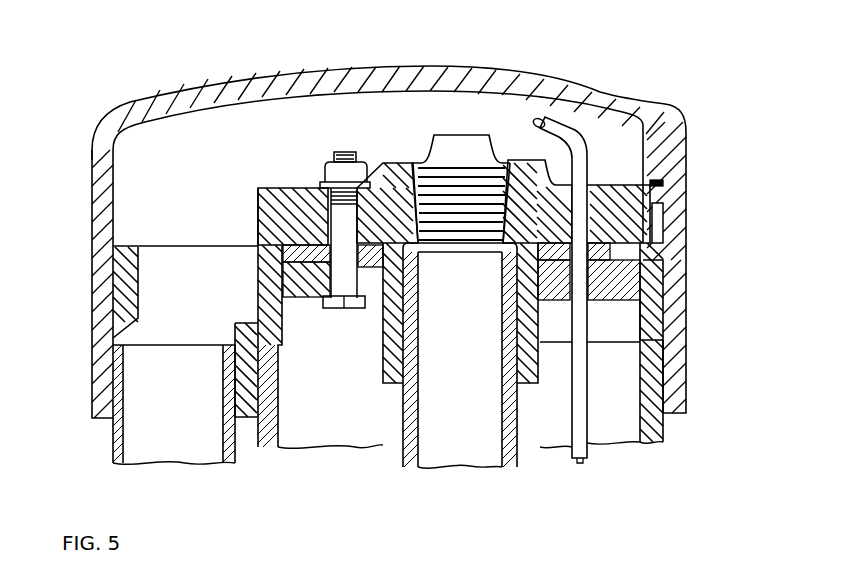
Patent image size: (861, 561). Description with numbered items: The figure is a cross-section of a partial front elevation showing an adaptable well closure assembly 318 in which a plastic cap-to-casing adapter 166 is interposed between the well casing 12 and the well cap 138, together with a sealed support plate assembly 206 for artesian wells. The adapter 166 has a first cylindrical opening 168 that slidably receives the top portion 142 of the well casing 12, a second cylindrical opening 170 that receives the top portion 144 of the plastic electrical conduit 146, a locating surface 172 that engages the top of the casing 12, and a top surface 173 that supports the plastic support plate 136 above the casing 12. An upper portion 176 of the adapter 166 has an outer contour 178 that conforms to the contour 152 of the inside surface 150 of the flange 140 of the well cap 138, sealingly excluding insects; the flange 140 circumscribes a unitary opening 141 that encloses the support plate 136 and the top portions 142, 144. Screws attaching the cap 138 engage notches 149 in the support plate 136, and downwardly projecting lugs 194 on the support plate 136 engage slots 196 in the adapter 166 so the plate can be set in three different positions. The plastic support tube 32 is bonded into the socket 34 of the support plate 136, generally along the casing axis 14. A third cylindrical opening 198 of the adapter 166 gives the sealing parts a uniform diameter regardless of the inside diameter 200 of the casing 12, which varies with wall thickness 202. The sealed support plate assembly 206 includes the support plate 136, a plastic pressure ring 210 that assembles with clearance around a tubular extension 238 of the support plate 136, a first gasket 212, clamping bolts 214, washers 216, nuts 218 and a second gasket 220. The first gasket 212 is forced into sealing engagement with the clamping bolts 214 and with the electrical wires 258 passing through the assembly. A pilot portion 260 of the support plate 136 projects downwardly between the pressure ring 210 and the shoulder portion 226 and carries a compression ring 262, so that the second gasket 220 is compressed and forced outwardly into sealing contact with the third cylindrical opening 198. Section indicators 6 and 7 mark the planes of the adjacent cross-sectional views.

The section line 6- 6 is at (100, 27).
The section line 7- 7 is at (70, 518).
The well casing 12 is at (303, 454).
The casing axis 14 is at (460, 145).
The support tube 32 is at (483, 478).
The socket 34 is at (495, 392).
The support plate 136 is at (256, 163).
The well cap 138 is at (269, 73).
The flange 140 is at (92, 206).
The unitary opening 141 is at (130, 182).
The top portion of well casing 142 is at (698, 340).
The top portion of electrical conduit 144 is at (80, 420).
The electrical conduit 146 is at (128, 444).
The notches 149 is at (668, 205).
The inside surface 150 is at (152, 315).
The contour 152 is at (113, 259).
The cap-to-casing adapter 166 is at (156, 196).
The first cylindrical opening 168 is at (655, 417).
The second cylindrical opening 170 is at (118, 425).
The locating surface 172 is at (712, 338).
The top surface 173 is at (157, 335).
The upper portion 176 is at (710, 243).
The outer contour 178 is at (113, 301).
The lugs 194 is at (260, 246).
The slots 196 is at (283, 250).
The third cylindrical opening 198 is at (635, 238).
The inside diameter of well casing 200 is at (636, 425).
The wall thickness 202 is at (240, 455).
The sealed support plate assembly 206 is at (607, 344).
The pressure ring 210 is at (597, 300).
The first gasket 212 is at (688, 188).
The clamping bolts 214 is at (342, 308).
The washers 216 is at (324, 180).
The nuts 218 is at (335, 152).
The second gasket 220 is at (262, 300).
The shoulder portion 226 is at (673, 263).
The tubular extension 238 is at (383, 368).
The electrical wires 258 is at (547, 122).
The pilot portion 260 is at (283, 270).
The compression ring 262 is at (258, 190).
The adaptable well closure assembly 318 is at (513, 68).